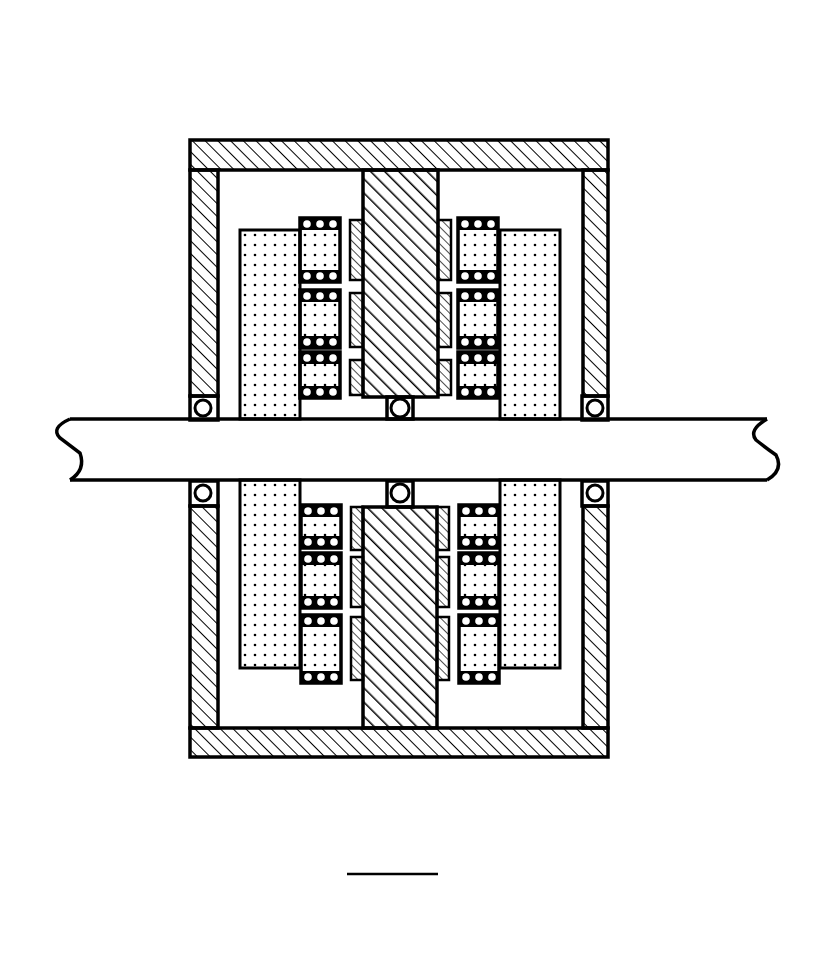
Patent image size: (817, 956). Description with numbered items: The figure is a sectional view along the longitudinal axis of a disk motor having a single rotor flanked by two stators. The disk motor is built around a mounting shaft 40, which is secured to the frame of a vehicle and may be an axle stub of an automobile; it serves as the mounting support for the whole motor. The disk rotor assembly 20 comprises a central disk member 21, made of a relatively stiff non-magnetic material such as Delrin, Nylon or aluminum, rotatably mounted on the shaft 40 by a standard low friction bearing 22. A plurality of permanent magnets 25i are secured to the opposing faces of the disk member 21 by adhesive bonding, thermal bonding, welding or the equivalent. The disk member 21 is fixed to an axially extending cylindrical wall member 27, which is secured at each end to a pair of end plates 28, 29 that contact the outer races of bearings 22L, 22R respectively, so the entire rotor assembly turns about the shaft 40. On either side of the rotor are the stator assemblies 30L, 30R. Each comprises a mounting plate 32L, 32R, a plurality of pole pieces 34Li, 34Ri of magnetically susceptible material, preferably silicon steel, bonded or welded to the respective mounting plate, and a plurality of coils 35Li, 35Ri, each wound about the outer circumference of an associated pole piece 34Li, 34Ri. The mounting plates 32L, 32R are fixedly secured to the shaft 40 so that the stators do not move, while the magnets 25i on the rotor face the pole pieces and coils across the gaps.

The disk rotor assembly 20 is at (270, 130).
The central disk member 21 is at (398, 223).
The bearing 22 is at (300, 498).
The left bearing 22L is at (195, 400).
The right bearing 22R is at (612, 403).
The permanent magnets 25i is at (452, 228).
The cylindrical wall member 27 is at (373, 140).
The end plate 28 is at (190, 195).
The end plate 29 is at (610, 256).
The left stator assembly 30L is at (250, 223).
The right stator assembly 30R is at (594, 140).
The mounting plate 32L is at (267, 530).
The mounting plate 32R is at (527, 303).
The pole pieces 34Li is at (352, 522).
The pole pieces 34Ri is at (483, 645).
The coils 35Li is at (300, 370).
The coils 35Ri is at (497, 367).
The mounting shaft 40 is at (723, 437).